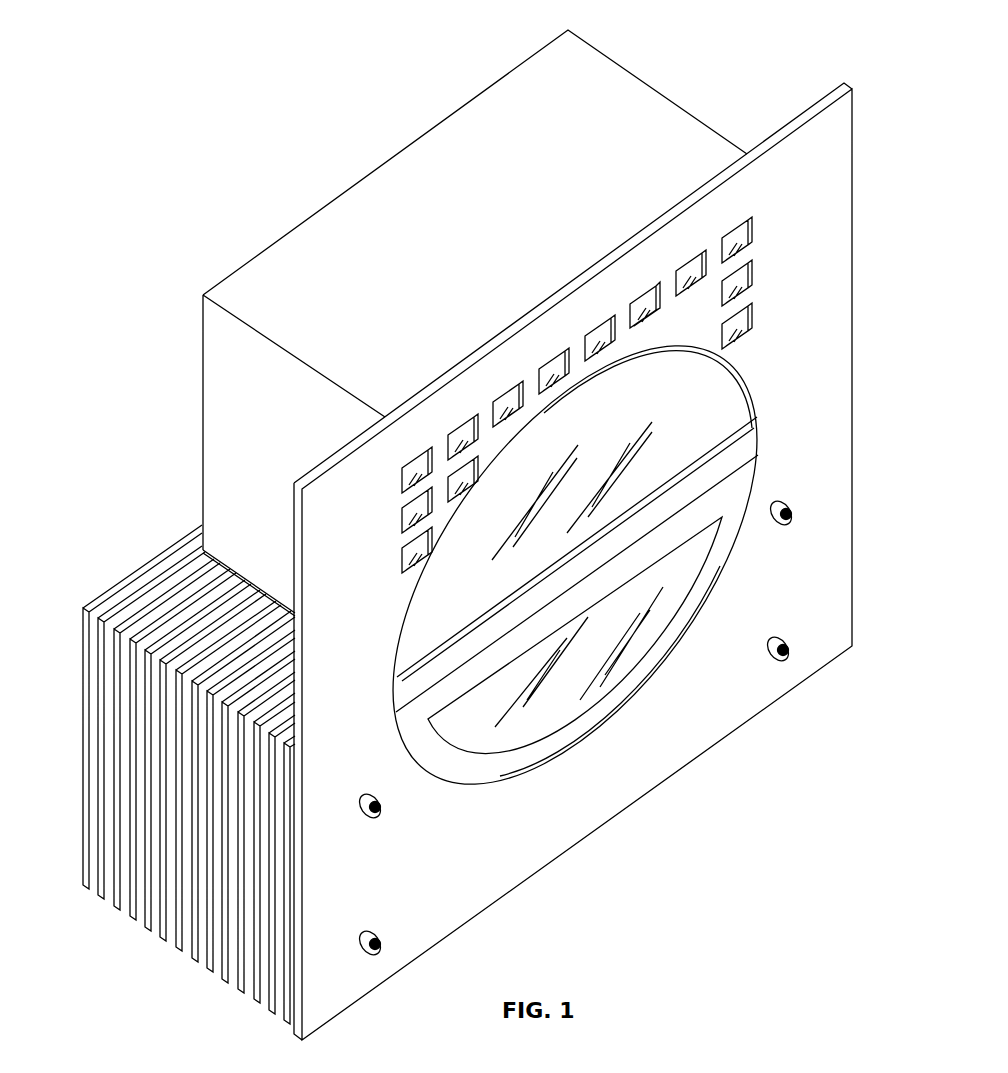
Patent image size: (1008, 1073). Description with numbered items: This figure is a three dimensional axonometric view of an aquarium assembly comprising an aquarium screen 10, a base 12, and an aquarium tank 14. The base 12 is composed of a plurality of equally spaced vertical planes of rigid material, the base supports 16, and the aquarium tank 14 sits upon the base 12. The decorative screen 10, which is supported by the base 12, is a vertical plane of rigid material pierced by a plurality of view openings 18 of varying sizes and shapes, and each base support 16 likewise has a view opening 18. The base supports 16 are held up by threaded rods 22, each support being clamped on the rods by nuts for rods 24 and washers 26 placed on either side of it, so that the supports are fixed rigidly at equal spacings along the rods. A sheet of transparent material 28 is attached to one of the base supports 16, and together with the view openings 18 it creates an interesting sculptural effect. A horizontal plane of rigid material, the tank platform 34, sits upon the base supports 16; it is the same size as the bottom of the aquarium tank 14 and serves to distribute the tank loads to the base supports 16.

The aquarium screen 10 is at (847, 337).
The base 12 is at (473, 535).
The aquarium tank 14 is at (475, 323).
The base supports 16 is at (103, 598).
The view openings 18 is at (438, 598).
The threaded rods 22 is at (380, 810).
The nuts for rods 24 is at (794, 644).
The washers 26 is at (381, 933).
The sheet of transparent material 28 is at (540, 714).
The tank platform 34 is at (206, 553).